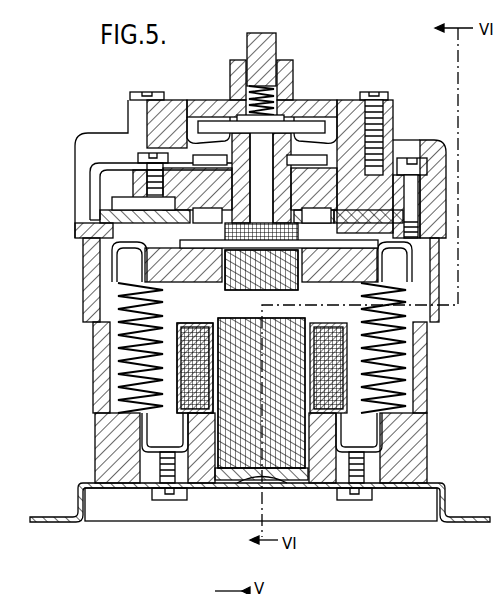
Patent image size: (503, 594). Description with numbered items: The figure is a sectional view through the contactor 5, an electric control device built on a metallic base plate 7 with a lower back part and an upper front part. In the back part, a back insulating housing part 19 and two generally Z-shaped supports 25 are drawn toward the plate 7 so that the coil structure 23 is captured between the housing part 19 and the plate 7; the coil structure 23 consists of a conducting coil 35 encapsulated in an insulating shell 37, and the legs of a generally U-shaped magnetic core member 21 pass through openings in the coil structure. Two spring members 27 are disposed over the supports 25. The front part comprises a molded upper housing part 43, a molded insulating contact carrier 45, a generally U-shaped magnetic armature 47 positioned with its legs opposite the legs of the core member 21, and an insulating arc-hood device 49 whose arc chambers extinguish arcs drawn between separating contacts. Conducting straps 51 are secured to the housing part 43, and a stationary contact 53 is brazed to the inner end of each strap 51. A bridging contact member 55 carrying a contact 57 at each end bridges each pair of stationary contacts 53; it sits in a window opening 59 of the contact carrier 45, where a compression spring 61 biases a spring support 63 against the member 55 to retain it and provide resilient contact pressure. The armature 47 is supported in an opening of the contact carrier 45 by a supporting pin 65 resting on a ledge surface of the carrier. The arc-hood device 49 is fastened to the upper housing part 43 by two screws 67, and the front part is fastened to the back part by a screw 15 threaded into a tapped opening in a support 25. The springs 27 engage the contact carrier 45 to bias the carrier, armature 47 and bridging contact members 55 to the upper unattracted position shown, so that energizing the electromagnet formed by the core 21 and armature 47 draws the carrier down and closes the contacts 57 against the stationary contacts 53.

The contactor 5 is at (57, 225).
The base plate 7 is at (81, 524).
The screw 15 is at (425, 166).
The back insulating housing part 19 is at (413, 431).
The magnetic core member 21 is at (238, 470).
The coil structure 23 is at (175, 435).
The support 25 is at (140, 268).
The spring member 27 is at (120, 408).
The conducting coil 35 is at (200, 323).
The insulating shell 37 is at (182, 323).
The upper housing part 43 is at (447, 207).
The contact carrier 45 is at (347, 298).
The magnetic armature 47 is at (228, 233).
The arc-hood device 49 is at (170, 106).
The conducting strap 51 is at (93, 177).
The stationary contact 53 is at (262, 179).
The bridging contact member 55 is at (223, 118).
The contact 57 is at (196, 113).
The window opening 59 is at (282, 99).
The compression spring 61 is at (271, 106).
The spring support 63 is at (257, 124).
The supporting pin 65 is at (312, 248).
The screw 67 is at (141, 92).